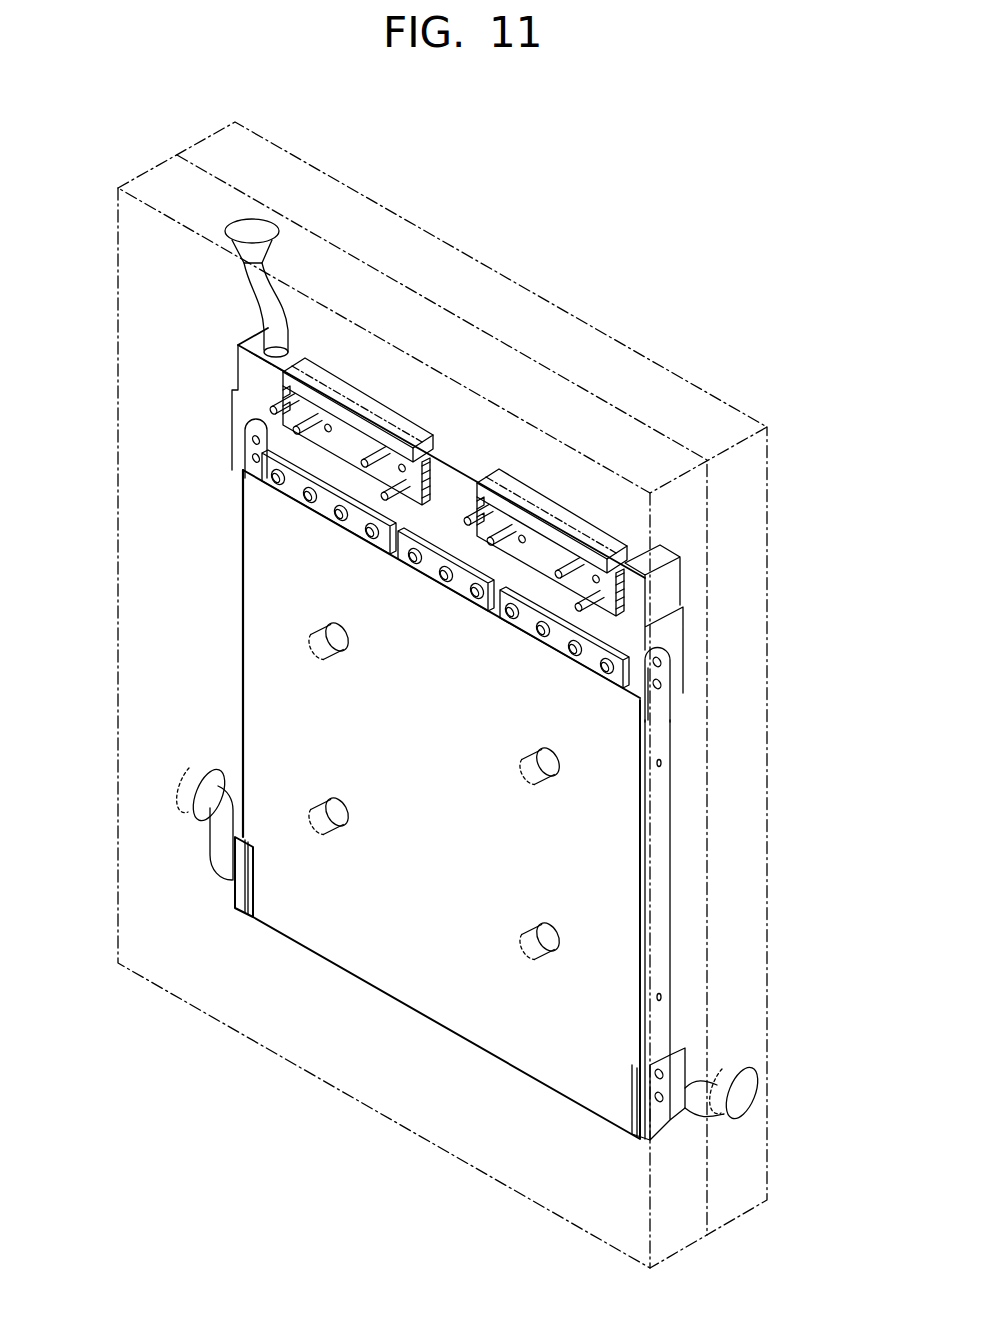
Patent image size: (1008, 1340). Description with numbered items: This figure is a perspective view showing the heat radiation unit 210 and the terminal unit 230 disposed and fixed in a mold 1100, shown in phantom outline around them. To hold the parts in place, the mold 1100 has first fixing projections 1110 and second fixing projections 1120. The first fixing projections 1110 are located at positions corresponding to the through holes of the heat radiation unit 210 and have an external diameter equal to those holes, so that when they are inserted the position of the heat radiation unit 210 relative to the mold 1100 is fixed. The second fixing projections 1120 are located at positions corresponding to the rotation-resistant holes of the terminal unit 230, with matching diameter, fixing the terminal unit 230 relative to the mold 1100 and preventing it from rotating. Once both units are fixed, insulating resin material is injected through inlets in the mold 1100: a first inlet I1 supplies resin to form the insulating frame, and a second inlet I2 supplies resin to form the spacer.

The mold 1100 is at (768, 463).
The heat radiation unit 210 is at (620, 837).
The terminal unit 230 is at (362, 398).
The second fixing projections 1120 is at (588, 578).
The first fixing projections 1110 is at (537, 955).
The first inlet I1 is at (270, 218).
The second inlet I2 is at (188, 794).